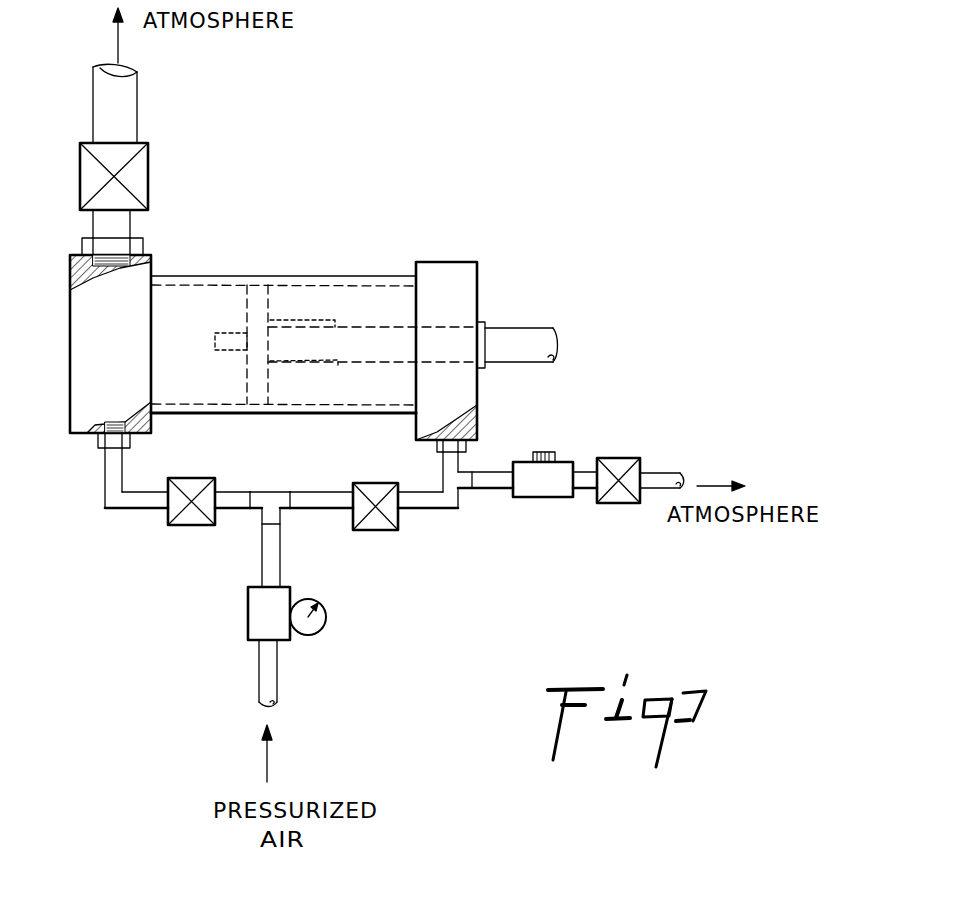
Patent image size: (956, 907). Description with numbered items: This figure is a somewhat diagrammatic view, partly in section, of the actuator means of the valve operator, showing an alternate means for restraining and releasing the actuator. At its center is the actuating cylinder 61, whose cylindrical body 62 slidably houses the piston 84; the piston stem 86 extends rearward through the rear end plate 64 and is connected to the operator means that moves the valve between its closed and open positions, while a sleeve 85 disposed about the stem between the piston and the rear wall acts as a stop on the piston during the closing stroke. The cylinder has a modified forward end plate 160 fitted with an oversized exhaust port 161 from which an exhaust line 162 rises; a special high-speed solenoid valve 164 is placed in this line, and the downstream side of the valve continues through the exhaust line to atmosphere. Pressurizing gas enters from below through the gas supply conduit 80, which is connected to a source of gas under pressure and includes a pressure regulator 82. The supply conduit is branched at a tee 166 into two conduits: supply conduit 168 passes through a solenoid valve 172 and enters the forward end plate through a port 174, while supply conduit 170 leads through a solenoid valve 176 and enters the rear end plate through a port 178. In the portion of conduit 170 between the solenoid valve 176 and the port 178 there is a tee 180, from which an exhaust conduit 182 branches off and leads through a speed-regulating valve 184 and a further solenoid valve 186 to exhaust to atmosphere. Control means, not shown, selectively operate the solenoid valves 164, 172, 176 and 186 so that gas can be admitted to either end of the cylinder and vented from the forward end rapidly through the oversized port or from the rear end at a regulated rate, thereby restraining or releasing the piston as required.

The cylinder 61 is at (347, 327).
The cylindrical body 62 is at (365, 278).
The rear end plate 64 is at (462, 293).
The gas supply conduit 80 is at (259, 678).
The pressure regulator 82 is at (248, 622).
The piston 84 is at (260, 306).
The sleeve 85 is at (320, 320).
The piston stem 86 is at (232, 342).
The forward end plate 160 is at (128, 318).
The exhaust port 161 is at (122, 257).
The exhaust line 162 is at (125, 104).
The high-speed solenoid valve 164 is at (133, 170).
The tee 166 is at (270, 493).
The gas supply conduit 168 is at (233, 510).
The gas supply conduit 170 is at (315, 510).
The solenoid valve 172 is at (192, 480).
The port 174 is at (103, 449).
The solenoid valve 176 is at (372, 530).
The port 178 is at (467, 450).
The tee 180 is at (443, 472).
The exhaust conduit 182 is at (495, 488).
The speed-regulating valve 184 is at (562, 463).
The solenoid valve 186 is at (628, 460).